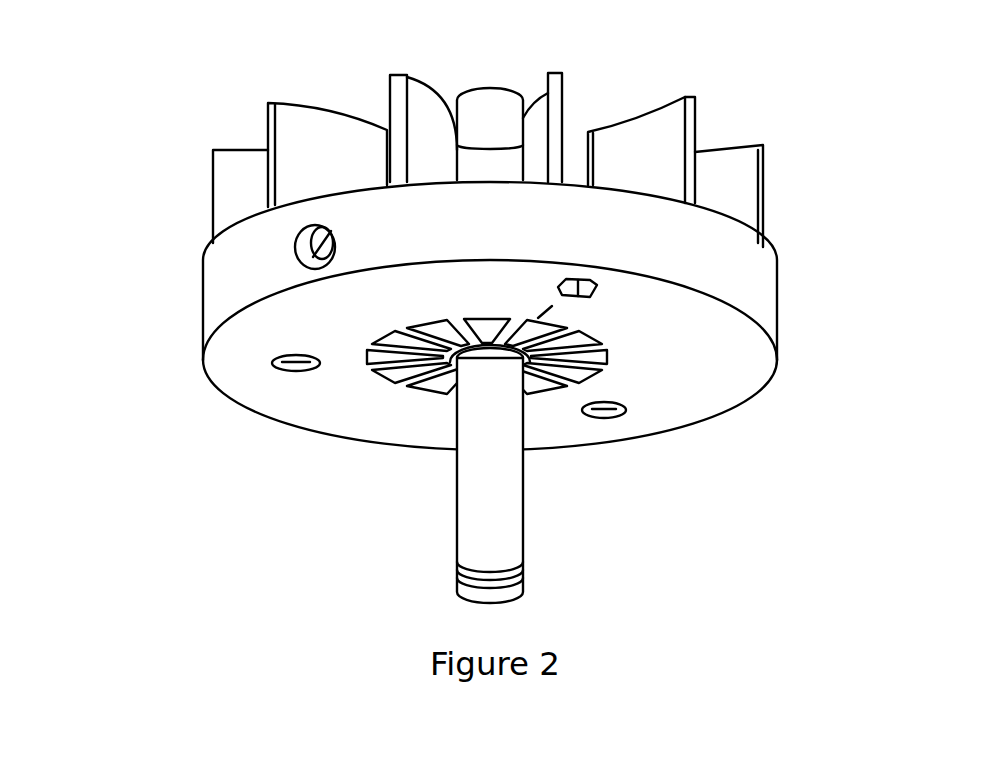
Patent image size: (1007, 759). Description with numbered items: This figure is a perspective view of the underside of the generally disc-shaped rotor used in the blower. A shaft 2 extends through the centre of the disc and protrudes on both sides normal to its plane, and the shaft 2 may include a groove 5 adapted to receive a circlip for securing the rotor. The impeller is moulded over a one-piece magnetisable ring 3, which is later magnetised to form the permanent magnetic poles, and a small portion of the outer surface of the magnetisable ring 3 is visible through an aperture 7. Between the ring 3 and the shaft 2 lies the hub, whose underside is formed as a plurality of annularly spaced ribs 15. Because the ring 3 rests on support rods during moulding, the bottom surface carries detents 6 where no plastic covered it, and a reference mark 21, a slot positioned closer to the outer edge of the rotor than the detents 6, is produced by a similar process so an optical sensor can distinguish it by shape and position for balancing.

The shaft 2 is at (495, 503).
The magnetisable ring 3 is at (290, 287).
The groove 5 is at (455, 567).
The detents 6 is at (292, 371).
The aperture 7 is at (297, 243).
The ribs 15 is at (613, 360).
The reference mark 21 is at (590, 283).